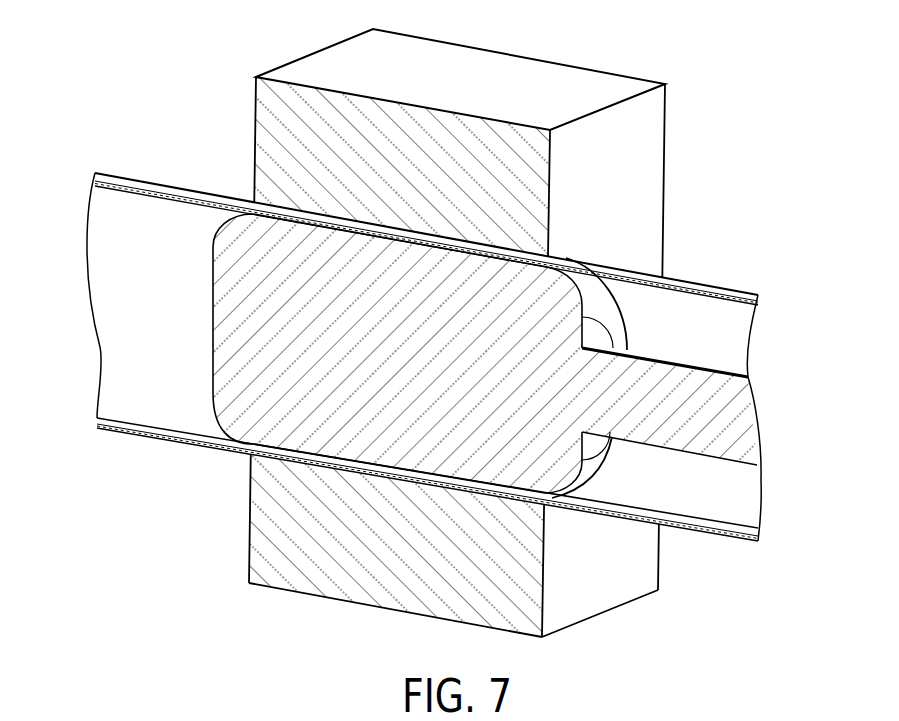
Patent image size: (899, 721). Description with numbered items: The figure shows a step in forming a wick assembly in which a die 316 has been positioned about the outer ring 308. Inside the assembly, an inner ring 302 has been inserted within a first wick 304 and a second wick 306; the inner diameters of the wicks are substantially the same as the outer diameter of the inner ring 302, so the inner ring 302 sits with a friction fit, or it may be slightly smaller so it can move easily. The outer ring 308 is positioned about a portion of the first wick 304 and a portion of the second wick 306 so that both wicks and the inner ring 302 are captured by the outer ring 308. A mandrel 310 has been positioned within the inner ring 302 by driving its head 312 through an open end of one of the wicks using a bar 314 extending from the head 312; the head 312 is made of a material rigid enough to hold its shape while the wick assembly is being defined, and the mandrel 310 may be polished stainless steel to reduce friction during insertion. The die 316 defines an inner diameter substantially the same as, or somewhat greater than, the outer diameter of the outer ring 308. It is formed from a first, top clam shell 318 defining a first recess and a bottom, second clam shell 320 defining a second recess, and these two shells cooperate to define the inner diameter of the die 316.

The inner ring 302 is at (538, 498).
The first wick 304 is at (723, 340).
The second wick 306 is at (130, 323).
The outer ring 308 is at (543, 259).
The mandrel 310 is at (230, 180).
The head 312 is at (253, 390).
The bar 314 is at (727, 418).
The die 316 is at (718, 113).
The first, top clam shell 318 is at (622, 137).
The bottom, second clam shell 320 is at (622, 552).